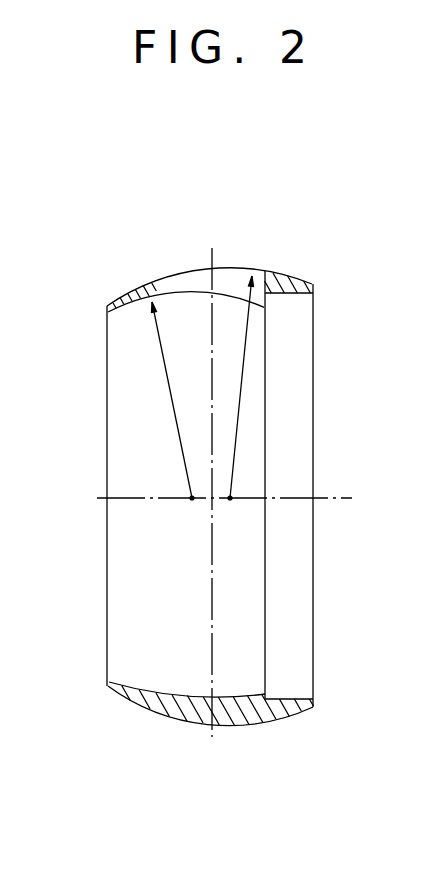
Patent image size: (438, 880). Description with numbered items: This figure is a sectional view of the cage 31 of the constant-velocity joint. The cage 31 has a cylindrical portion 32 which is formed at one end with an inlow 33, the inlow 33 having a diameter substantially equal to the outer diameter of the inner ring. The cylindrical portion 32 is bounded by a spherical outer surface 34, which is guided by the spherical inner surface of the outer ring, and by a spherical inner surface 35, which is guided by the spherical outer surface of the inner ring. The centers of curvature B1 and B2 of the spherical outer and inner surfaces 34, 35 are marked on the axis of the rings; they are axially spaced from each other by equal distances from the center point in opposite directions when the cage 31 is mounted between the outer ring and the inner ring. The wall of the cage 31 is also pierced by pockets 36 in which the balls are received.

The cage 31 is at (129, 292).
The cylindrical portion 32 is at (182, 712).
The inlow 33 is at (293, 699).
The spherical outer surface 34 is at (145, 285).
The spherical inner surface 35 is at (133, 305).
The pockets 36 is at (236, 277).
The center of curvature of the spherical outer surface B1 is at (231, 499).
The center of curvature of the spherical inner surface B2 is at (191, 499).